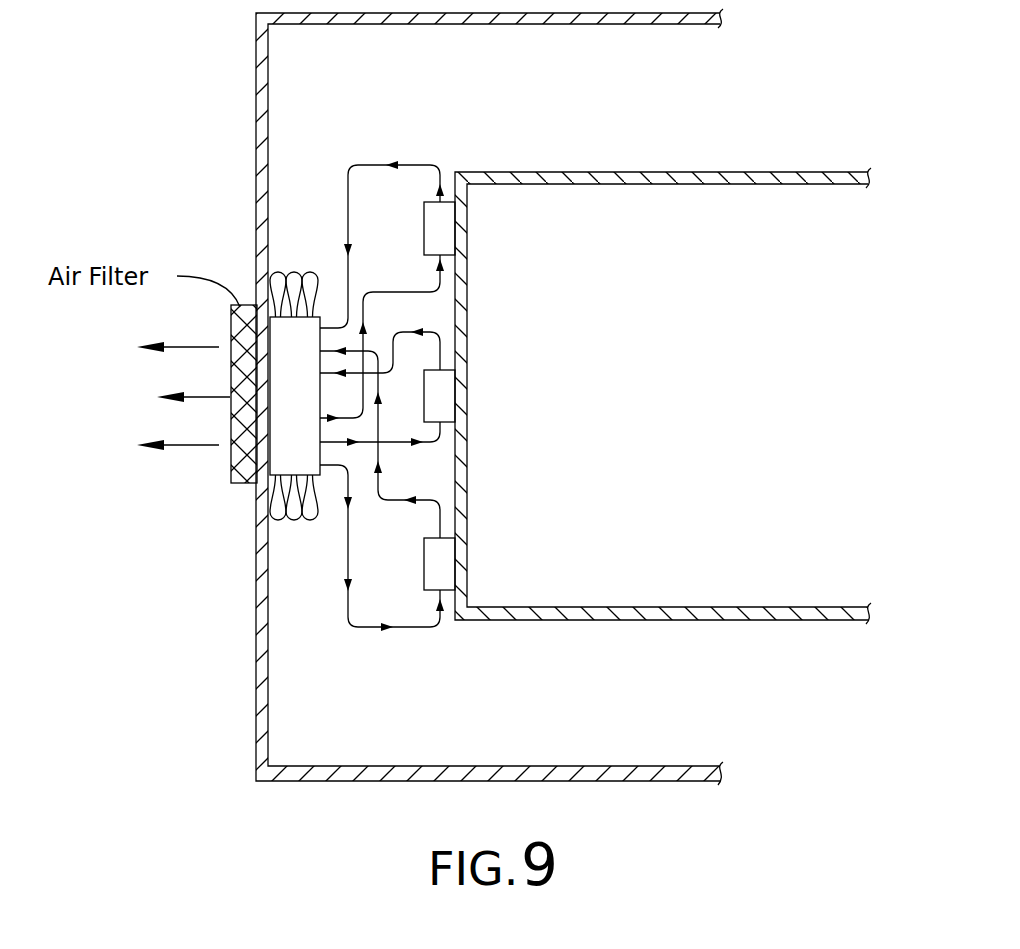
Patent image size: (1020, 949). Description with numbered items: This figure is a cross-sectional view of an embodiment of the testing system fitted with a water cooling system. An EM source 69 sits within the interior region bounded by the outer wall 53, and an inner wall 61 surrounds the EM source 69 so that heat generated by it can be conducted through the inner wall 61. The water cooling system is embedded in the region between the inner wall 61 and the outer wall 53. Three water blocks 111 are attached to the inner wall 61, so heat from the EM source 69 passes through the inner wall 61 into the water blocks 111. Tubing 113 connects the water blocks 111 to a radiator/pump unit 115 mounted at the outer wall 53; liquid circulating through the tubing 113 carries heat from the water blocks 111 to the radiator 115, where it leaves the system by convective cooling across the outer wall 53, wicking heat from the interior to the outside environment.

The outer wall 53 is at (267, 92).
The inner wall 61 is at (462, 345).
The EM source 69 is at (722, 417).
The water block 111 is at (445, 238).
The tubing 113 is at (412, 627).
The radiator/pump unit 115 is at (297, 443).